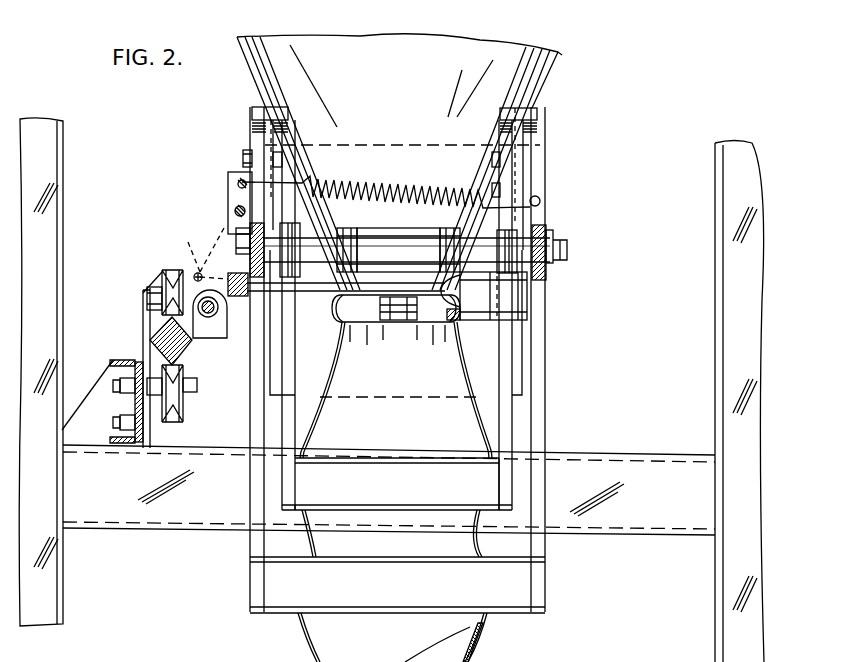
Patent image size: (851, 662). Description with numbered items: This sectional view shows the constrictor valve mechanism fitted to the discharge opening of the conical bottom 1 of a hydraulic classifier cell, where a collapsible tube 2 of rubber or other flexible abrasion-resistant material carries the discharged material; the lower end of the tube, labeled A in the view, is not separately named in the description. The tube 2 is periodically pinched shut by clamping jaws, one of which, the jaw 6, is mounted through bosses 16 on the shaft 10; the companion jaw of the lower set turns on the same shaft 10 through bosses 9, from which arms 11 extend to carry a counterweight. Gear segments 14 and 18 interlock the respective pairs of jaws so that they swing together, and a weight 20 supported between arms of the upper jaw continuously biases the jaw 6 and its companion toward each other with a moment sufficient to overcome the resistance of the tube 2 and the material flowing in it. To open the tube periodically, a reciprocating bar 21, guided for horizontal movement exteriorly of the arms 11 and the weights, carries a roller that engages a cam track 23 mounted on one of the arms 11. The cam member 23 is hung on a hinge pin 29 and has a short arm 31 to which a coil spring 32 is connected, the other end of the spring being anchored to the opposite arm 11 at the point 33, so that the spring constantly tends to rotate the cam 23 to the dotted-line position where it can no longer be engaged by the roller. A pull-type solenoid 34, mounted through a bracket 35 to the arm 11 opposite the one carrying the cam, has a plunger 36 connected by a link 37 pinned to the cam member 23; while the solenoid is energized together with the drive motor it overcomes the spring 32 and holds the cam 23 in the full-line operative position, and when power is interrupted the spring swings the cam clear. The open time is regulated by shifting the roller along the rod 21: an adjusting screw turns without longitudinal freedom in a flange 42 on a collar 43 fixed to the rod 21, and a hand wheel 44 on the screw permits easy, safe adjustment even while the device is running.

The conical bottom 1 is at (540, 82).
The collapsible tube 2 is at (485, 652).
The clamping jaw 6 is at (377, 497).
The discharge outlet A is at (373, 593).
The bosses 9 is at (263, 227).
The shaft 10 is at (393, 247).
The arms 11 is at (247, 233).
The gear segment 14 is at (252, 120).
The bosses 16 is at (302, 232).
The gear segment 18 is at (537, 125).
The weight 20 is at (523, 393).
The reciprocating bar 21 is at (160, 327).
The cam track 23 is at (230, 378).
The hinge pin 29 is at (228, 206).
The short arm 31 is at (228, 173).
The coil spring 32 is at (410, 185).
The spring anchor 33 is at (540, 202).
The solenoid 34 is at (497, 322).
The bracket 35 is at (532, 222).
The plunger 36 is at (447, 315).
The link 37 is at (313, 292).
The flange 42 is at (153, 300).
The collar 43 is at (147, 352).
The hand wheel 44 is at (167, 270).